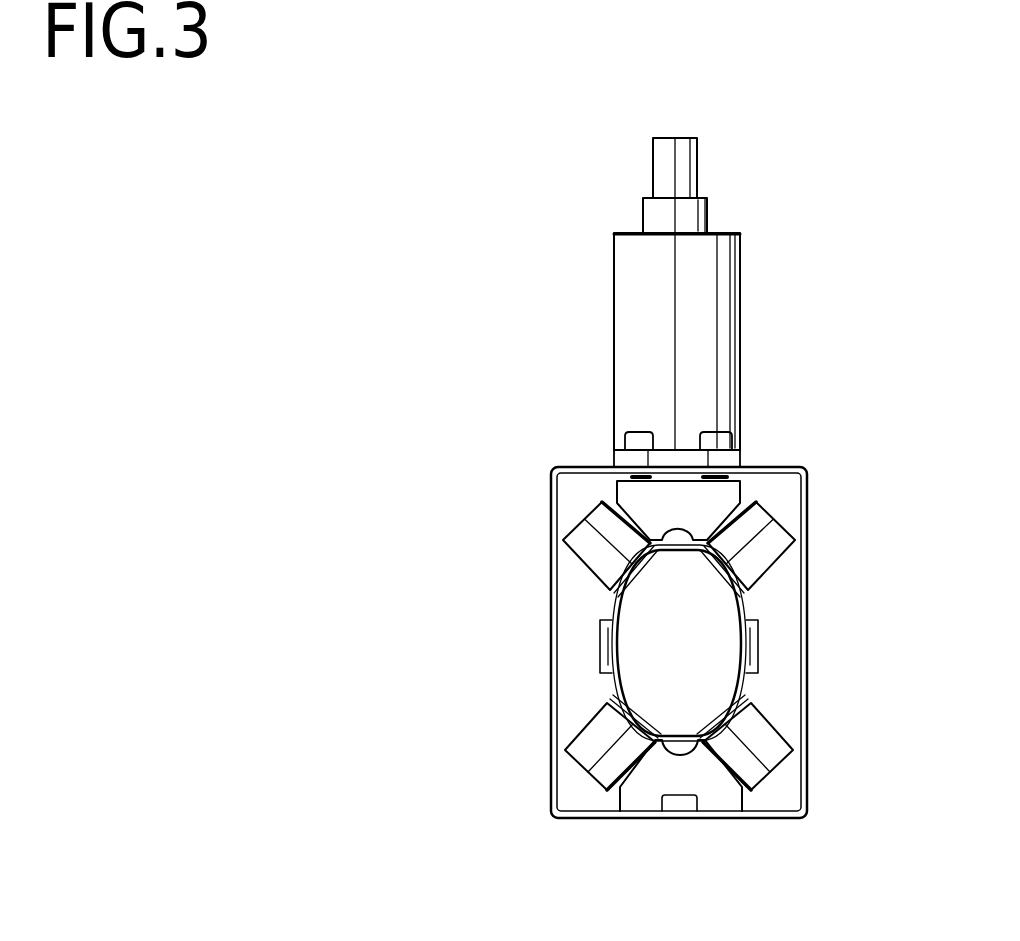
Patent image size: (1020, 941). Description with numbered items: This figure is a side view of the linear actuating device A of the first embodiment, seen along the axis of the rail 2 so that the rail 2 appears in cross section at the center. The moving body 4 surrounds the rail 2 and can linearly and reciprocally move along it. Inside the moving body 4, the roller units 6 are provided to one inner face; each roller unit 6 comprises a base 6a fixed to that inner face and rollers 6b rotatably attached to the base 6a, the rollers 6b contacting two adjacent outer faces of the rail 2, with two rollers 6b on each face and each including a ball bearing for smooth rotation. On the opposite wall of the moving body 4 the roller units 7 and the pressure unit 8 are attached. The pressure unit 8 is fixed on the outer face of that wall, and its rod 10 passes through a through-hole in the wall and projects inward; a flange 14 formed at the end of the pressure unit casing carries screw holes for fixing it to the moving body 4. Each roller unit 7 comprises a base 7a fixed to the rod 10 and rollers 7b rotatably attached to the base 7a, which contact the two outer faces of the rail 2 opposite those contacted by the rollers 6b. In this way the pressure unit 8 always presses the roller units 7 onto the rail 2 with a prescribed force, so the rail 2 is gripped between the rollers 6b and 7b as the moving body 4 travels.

The linear actuating device A is at (480, 97).
The rod 10 is at (683, 173).
The pressure unit 8 is at (703, 350).
The flange 14 is at (680, 457).
The moving body 4 is at (805, 498).
The roller unit 7 is at (430, 485).
The base 7a is at (660, 504).
The roller 7b is at (592, 547).
The rail 2 is at (753, 608).
The roller unit 6 is at (924, 772).
The base 6a is at (718, 793).
The roller 6b is at (773, 752).